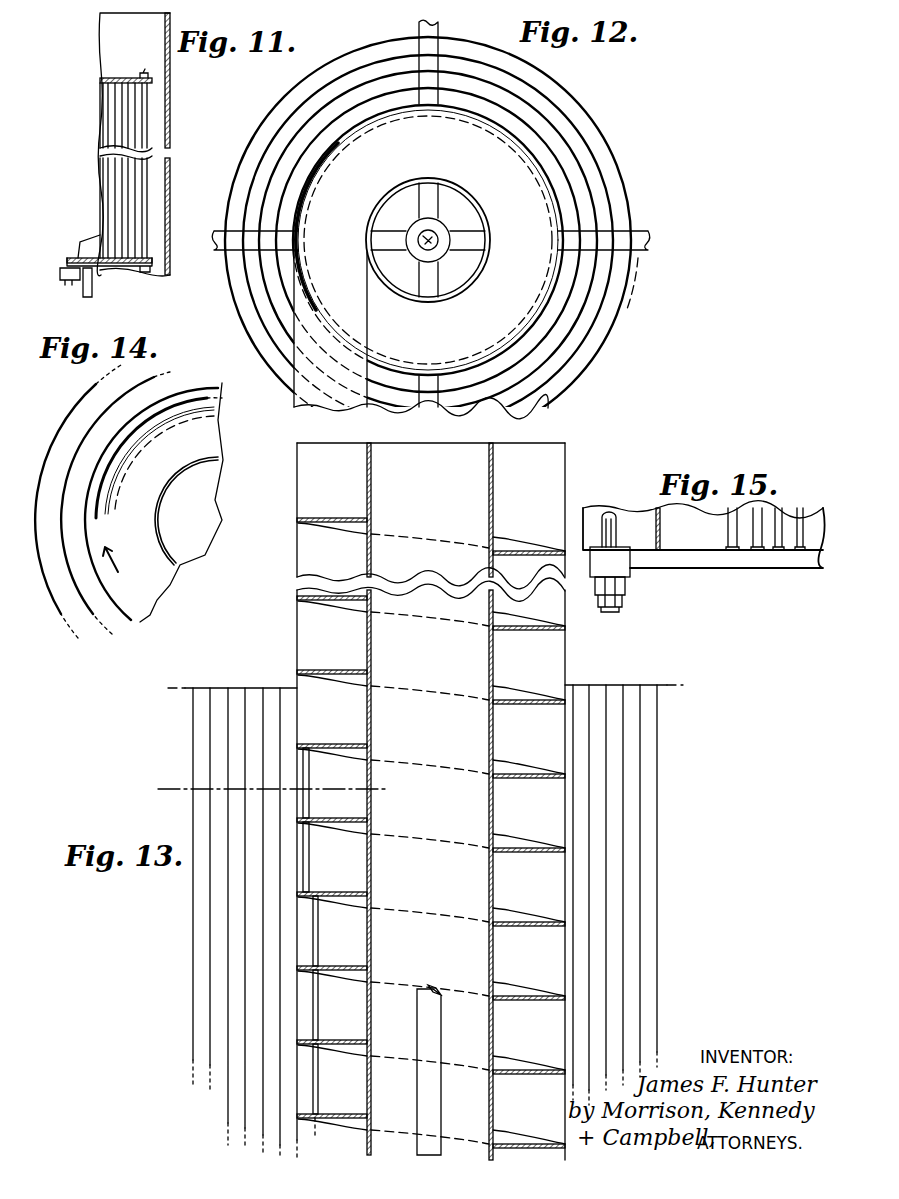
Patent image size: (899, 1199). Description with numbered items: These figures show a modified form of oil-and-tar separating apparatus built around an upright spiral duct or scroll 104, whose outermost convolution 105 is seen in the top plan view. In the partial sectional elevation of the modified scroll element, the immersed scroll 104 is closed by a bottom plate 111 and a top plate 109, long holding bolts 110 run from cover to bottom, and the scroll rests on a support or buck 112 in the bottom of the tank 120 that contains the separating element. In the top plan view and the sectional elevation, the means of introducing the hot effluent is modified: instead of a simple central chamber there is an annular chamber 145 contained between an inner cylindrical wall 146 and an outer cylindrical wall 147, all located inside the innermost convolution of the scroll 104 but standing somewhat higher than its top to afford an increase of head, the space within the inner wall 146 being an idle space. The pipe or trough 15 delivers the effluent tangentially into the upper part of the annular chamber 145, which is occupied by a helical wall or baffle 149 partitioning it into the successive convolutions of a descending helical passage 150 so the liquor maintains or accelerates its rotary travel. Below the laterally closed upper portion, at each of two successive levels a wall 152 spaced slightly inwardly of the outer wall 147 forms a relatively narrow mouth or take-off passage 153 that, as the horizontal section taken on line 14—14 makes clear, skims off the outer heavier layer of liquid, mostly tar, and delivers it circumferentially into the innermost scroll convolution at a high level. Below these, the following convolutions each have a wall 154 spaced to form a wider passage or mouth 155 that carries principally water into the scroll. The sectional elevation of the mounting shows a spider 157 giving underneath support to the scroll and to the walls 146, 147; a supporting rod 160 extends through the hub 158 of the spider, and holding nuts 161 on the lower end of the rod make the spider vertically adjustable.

In FIG. 13, the section line 14— 14 is at (272, 790).
In FIG. 12, the pipe or trough 15 is at (295, 401).
In FIG. 13, the pipe or trough 15 is at (431, 522).
In FIG. 11, the scroll 104 is at (120, 172).
In FIG. 12, the scroll 104 is at (597, 185).
In FIG. 14, the scroll 104 is at (62, 612).
In FIG. 13, the scroll 104 is at (280, 688).
In FIG. 15, the scroll 104 is at (797, 527).
In FIG. 12, the outer cylinder ring 105 is at (578, 120).
In FIG. 11, the top plate 109 is at (123, 78).
In FIG. 11, the holding bolts 110 is at (147, 125).
In FIG. 11, the bottom plate 111 is at (67, 260).
In FIG. 11, the support or buck 112 is at (93, 288).
In FIG. 11, the tank 120 is at (172, 98).
In FIG. 12, the annular chamber 145 is at (467, 222).
In FIG. 13, the annular chamber 145 is at (431, 801).
In FIG. 12, the inner cylindrical wall 146 is at (463, 189).
In FIG. 14, the inner cylindrical wall 146 is at (158, 512).
In FIG. 13, the inner cylindrical wall 146 is at (495, 481).
In FIG. 15, the inner cylindrical wall 146 is at (661, 523).
In FIG. 12, the outer cylindrical wall 147 is at (557, 210).
In FIG. 14, the outer cylindrical wall 147 is at (142, 618).
In FIG. 13, the outer cylindrical wall 147 is at (567, 493).
In FIG. 15, the outer cylindrical wall 147 is at (727, 530).
In FIG. 13, the helical wall or baffle 149 is at (315, 670).
In FIG. 13, the helical passage 150 is at (424, 831).
In FIG. 12, the wall 152 is at (321, 194).
In FIG. 14, the wall 152 is at (124, 447).
In FIG. 13, the wall 152 is at (305, 800).
In FIG. 13, the mouth or take-off passage 153 is at (310, 775).
In FIG. 12, the wall 154 is at (318, 218).
In FIG. 14, the wall 154 is at (118, 480).
In FIG. 13, the wall 154 is at (307, 918).
In FIG. 13, the wider passage or mouth 155 is at (319, 940).
In FIG. 12, the spider 157 is at (647, 229).
In FIG. 15, the spider 157 is at (688, 557).
In FIG. 15, the hub 158 is at (617, 562).
In FIG. 12, the supporting rod 160 is at (423, 236).
In FIG. 13, the supporting rod 160 is at (439, 1109).
In FIG. 15, the supporting rod 160 is at (633, 495).
In FIG. 15, the holding nuts 161 is at (597, 600).